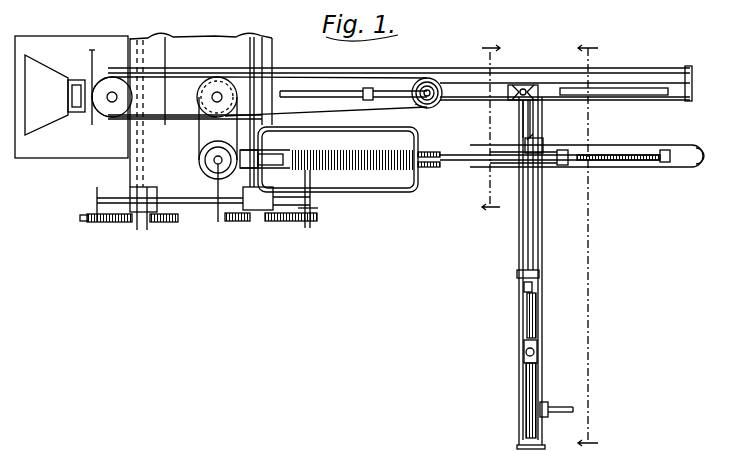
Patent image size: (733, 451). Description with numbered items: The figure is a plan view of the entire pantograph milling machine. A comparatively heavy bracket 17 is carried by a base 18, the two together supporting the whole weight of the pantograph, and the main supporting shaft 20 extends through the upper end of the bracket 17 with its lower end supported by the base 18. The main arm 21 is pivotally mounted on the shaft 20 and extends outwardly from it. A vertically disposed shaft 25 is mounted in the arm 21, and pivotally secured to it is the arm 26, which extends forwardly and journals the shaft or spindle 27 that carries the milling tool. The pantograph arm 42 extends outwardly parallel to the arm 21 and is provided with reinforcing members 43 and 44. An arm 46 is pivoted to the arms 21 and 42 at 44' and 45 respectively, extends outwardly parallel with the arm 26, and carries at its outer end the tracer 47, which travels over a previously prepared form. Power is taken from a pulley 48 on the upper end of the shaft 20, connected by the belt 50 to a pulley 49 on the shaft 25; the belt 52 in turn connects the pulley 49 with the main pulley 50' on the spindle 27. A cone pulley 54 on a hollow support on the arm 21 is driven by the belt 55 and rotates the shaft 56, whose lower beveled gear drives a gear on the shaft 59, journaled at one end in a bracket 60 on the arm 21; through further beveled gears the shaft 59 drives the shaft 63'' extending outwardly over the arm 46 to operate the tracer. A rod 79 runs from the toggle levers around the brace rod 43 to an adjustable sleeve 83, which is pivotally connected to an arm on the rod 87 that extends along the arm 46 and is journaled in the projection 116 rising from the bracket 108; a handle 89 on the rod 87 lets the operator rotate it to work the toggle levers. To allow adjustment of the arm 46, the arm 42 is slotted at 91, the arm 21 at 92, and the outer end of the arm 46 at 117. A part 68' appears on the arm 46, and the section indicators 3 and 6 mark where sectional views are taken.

The bracket 17 is at (47, 64).
The base 18 is at (68, 36).
The main supporting shaft 20 is at (108, 102).
The main arm 21 is at (173, 76).
The vertically disposed shaft 25 is at (218, 92).
The arm 26 is at (203, 137).
The shaft or spindle 27 is at (209, 170).
The pantograph arm 42 is at (643, 167).
The reinforcing member (brace rod) 43 is at (378, 146).
The reinforcing member 44 is at (693, 170).
The pivot 44' is at (535, 64).
The pivot 45 is at (543, 146).
The arm 46 is at (519, 310).
The tracer 47 is at (526, 347).
The pulley 48 is at (114, 119).
The pulley 49 is at (243, 80).
The belt 50 is at (201, 99).
The main pulley 50' is at (213, 201).
The belt 52 is at (205, 150).
The cone pulley 54 is at (430, 103).
The belt 55 is at (330, 98).
The shaft 56 is at (432, 84).
The shaft 59 is at (396, 98).
The bracket 60 is at (365, 99).
The shaft 63'' is at (504, 189).
The coupling 68' is at (497, 288).
The rod 79 is at (416, 192).
The adjustable sleeve 83 is at (562, 166).
The rod (shaft) 87 is at (545, 302).
The handle 89 is at (565, 404).
The slot 91 is at (624, 148).
The slot 92 is at (636, 95).
The bracket 108 is at (531, 106).
The projection 116 is at (531, 135).
The slot 117 is at (525, 419).
The section line 3 is at (588, 236).
The section line 6 is at (491, 128).